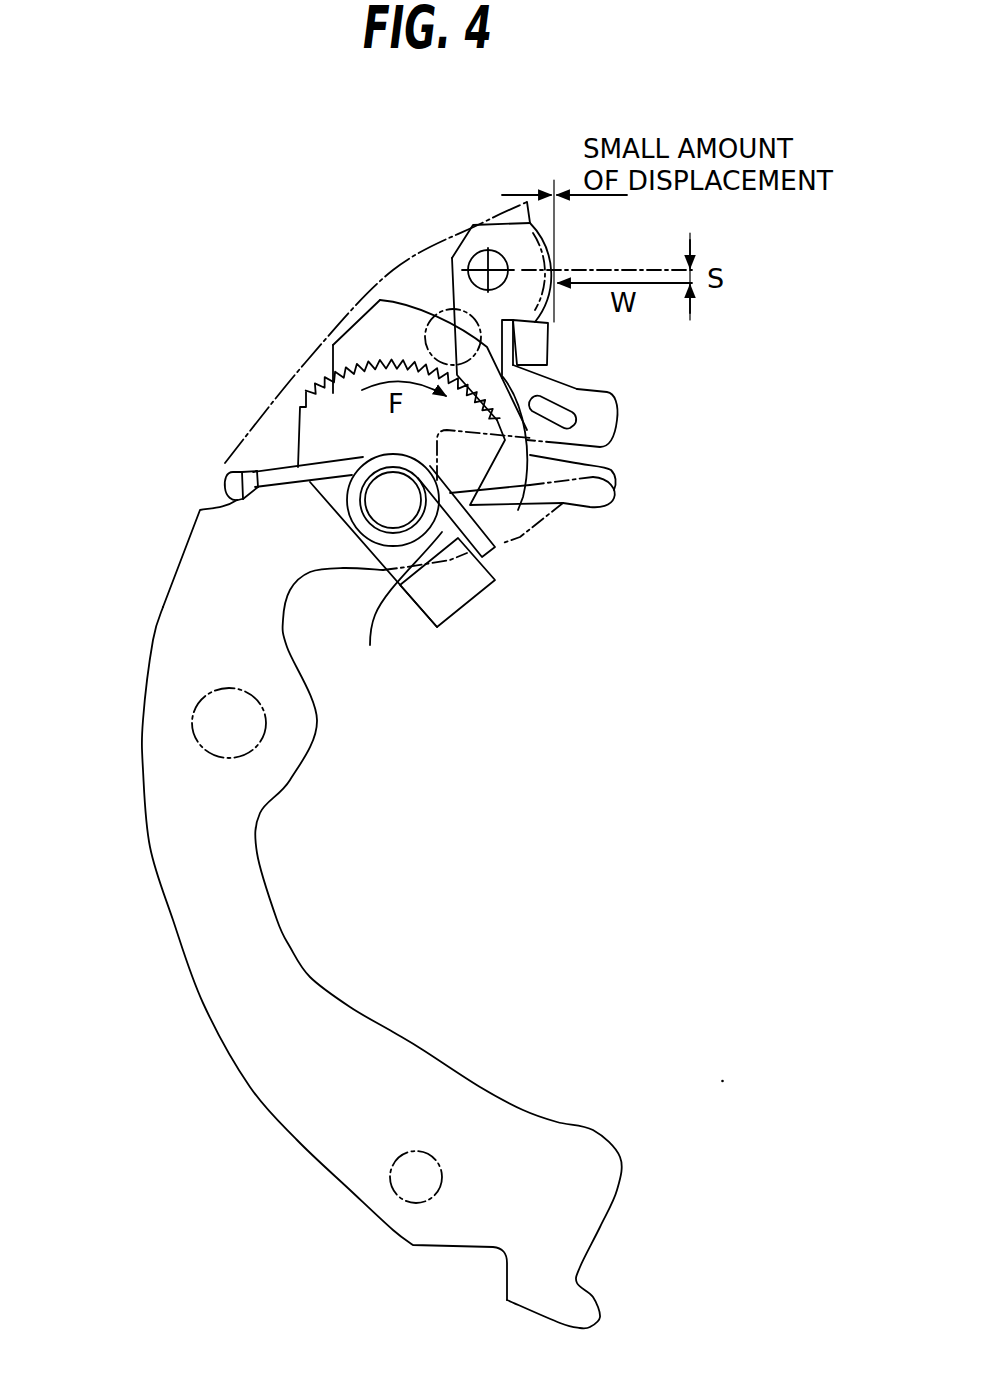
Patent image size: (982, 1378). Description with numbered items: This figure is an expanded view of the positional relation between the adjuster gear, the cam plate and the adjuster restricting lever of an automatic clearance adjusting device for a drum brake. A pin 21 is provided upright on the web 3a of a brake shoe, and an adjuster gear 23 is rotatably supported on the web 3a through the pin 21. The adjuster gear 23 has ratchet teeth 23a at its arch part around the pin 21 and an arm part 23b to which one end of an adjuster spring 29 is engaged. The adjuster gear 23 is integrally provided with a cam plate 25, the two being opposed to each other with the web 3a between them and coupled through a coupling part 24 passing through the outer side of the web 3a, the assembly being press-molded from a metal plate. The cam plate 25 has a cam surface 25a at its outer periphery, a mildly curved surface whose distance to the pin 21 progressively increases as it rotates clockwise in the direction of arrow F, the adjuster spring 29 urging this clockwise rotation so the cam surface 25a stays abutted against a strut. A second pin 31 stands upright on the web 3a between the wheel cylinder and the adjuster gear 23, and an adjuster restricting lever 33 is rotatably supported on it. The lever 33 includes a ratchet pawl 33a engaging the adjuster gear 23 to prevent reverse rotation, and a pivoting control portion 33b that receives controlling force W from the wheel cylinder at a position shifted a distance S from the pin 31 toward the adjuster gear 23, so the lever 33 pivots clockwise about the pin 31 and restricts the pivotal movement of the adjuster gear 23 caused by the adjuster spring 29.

The web 3a is at (200, 613).
The pin 21 is at (377, 508).
The adjuster gear 23 is at (301, 387).
The ratchet teeth 23a is at (548, 402).
The arm part 23b is at (370, 645).
The coupling part 24 is at (467, 603).
The cam plate 25 is at (505, 470).
The cam surface 25a is at (566, 457).
The adjuster spring 29 is at (270, 463).
The pin 31 is at (455, 249).
The adjuster restricting lever 33 is at (456, 238).
The ratchet pawl 33a is at (468, 272).
The pivoting control portion 33b is at (552, 300).